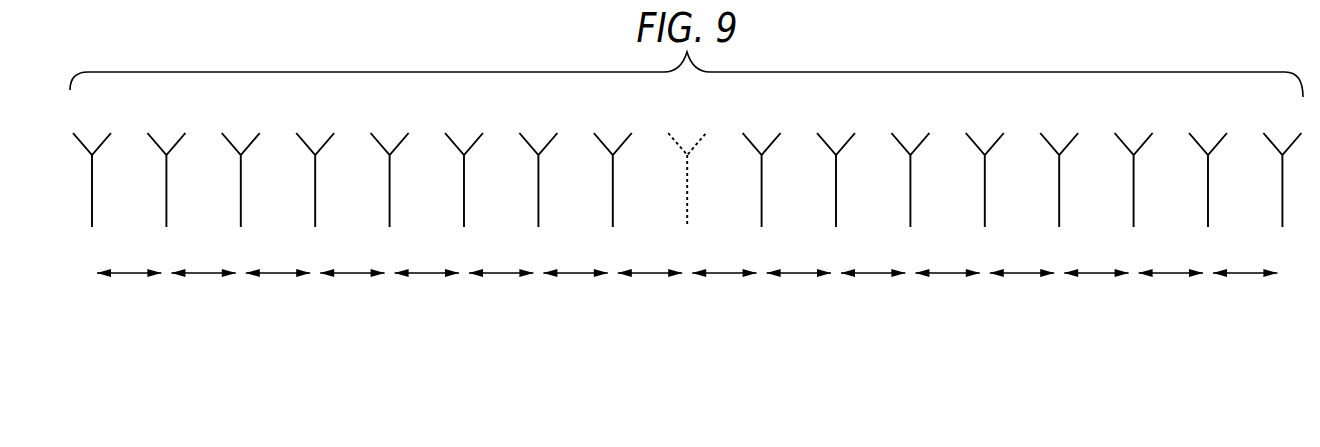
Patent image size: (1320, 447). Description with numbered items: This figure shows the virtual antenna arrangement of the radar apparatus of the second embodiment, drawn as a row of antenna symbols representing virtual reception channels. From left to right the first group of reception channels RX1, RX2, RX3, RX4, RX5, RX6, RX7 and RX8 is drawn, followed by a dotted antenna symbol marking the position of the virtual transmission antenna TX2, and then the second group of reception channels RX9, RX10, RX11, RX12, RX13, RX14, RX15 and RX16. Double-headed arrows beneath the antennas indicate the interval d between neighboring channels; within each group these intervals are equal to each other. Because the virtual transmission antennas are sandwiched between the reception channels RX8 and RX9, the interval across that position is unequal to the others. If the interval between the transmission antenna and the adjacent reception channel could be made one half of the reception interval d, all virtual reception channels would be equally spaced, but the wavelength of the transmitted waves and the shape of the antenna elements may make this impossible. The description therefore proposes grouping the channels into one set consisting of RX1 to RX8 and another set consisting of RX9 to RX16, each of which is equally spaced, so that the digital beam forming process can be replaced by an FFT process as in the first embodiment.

The reception channel RX1 is at (92, 195).
The reception channel RX2 is at (166, 195).
The reception channel RX3 is at (241, 195).
The reception channel RX4 is at (315, 195).
The reception channel RX5 is at (390, 195).
The reception channel RX6 is at (464, 195).
The reception channel RX7 is at (538, 195).
The reception channel RX8 is at (613, 195).
The virtual transmission antenna TX2 is at (688, 195).
The reception channel RX9 is at (762, 195).
The reception channel RX10 is at (836, 195).
The reception channel RX11 is at (910, 195).
The reception channel RX12 is at (984, 195).
The reception channel RX13 is at (1059, 195).
The reception channel RX14 is at (1133, 195).
The reception channel RX15 is at (1208, 195).
The reception channel RX16 is at (1282, 195).
The interval between reception channels d is at (687, 288).